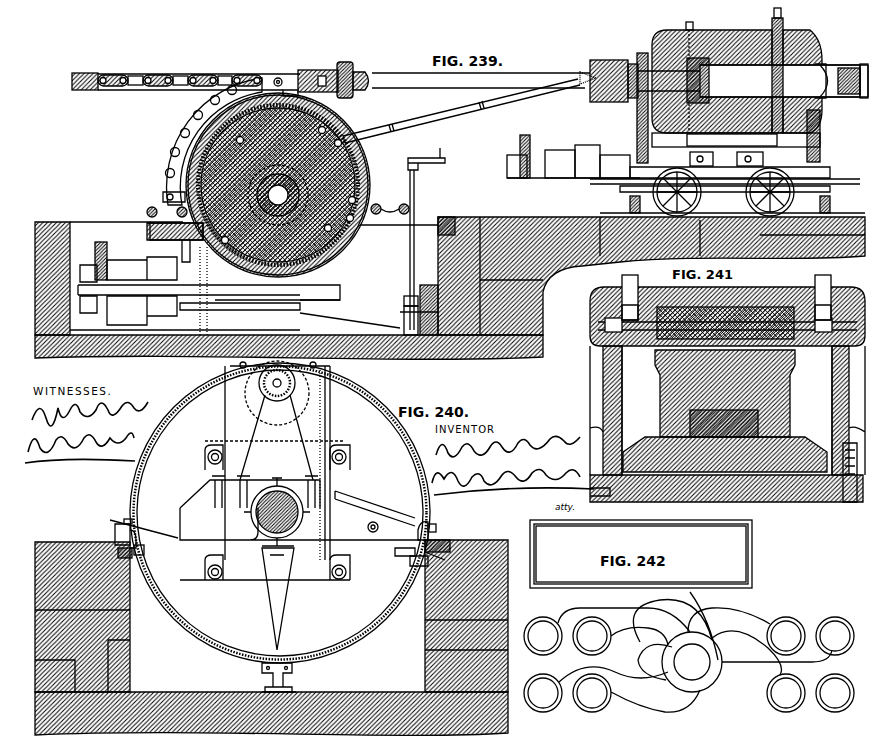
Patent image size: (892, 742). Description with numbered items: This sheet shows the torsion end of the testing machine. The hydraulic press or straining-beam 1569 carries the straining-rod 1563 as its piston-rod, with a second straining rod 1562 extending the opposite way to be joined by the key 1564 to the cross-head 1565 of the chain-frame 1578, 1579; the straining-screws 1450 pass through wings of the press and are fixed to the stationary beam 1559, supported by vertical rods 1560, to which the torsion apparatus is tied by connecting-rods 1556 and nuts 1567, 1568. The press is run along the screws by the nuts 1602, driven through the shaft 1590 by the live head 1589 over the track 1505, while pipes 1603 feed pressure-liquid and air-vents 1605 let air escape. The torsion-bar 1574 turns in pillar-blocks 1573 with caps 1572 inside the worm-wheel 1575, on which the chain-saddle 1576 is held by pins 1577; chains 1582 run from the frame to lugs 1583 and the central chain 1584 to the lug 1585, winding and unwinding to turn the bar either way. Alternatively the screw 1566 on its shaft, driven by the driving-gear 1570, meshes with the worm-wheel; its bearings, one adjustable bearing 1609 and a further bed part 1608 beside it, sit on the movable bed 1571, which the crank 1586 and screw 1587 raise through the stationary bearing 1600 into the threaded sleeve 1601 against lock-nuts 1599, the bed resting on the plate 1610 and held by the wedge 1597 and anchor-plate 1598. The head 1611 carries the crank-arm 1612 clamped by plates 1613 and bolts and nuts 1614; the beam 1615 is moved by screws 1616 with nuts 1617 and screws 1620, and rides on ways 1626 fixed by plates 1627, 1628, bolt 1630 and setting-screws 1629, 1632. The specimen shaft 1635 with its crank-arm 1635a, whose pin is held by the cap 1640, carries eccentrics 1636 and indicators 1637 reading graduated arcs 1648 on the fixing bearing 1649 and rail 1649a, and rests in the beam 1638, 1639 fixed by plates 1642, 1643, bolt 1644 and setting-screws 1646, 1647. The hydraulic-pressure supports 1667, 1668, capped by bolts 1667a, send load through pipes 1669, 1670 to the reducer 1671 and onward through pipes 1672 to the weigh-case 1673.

In FIG. 239, the straining-screws 1450 is at (853, 76).
In FIG. 239, the track 1505 is at (732, 192).
In FIG. 239, the connecting-rods 1556 is at (461, 111).
In FIG. 239, the stationary beam 1559 is at (604, 75).
In FIG. 239, the vertical rods 1560 is at (697, 108).
In FIG. 239, the straining rod 1562 is at (481, 80).
In FIG. 239, the straining-rod 1563 is at (784, 81).
In FIG. 239, the key 1564 is at (355, 76).
In FIG. 239, the cross-head 1565 is at (318, 73).
In FIG. 239, the screw 1566 is at (277, 286).
In FIG. 239, the nuts 1567 is at (668, 80).
In FIG. 239, the nuts 1568 is at (328, 174).
In FIG. 239, the hydraulic press or straining-beam 1569 is at (469, 157).
In FIG. 239, the driving-gear 1570 is at (143, 288).
In FIG. 239, the movable bed-plate 1571 is at (240, 310).
In FIG. 239, the caps 1572 is at (278, 189).
In FIG. 239, the pillar-blocks 1573 is at (278, 185).
In FIG. 239, the torsion-bar 1574 is at (278, 195).
In FIG. 239, the worm-wheel 1575 is at (251, 249).
In FIG. 239, the chain-saddle 1576 is at (318, 227).
In FIG. 239, the pins or tapered bolts 1577 is at (231, 133).
In FIG. 239, the chain-frame cross-head 1578 is at (85, 76).
In FIG. 239, the chain-frame 1579 is at (199, 76).
In FIG. 239, the chains 1582 is at (217, 134).
In FIG. 239, the lugs 1583 is at (165, 194).
In FIG. 239, the central chain 1584 is at (176, 74).
In FIG. 239, the lug 1585 is at (294, 96).
In FIG. 239, the crank 1586 is at (426, 157).
In FIG. 239, the screw 1587 is at (424, 250).
In FIG. 239, the live head 1589 is at (573, 155).
In FIG. 239, the shaft 1590 is at (725, 180).
In FIG. 239, the wedge 1597 is at (435, 310).
In FIG. 239, the anchor-plate 1598 is at (426, 312).
In FIG. 239, the lock-nuts 1599 is at (401, 299).
In FIG. 239, the stationary bearing 1600 is at (407, 226).
In FIG. 239, the threaded sleeve 1601 is at (401, 320).
In FIG. 239, the nuts 1602 is at (823, 72).
In FIG. 239, the pipes 1603 is at (730, 155).
In FIG. 239, the air-vents 1605 is at (733, 67).
In FIG. 239, the ledge 1608 is at (192, 223).
In FIG. 239, the bearing 1609 is at (350, 301).
In FIG. 239, the plate 1610 is at (185, 333).
In FIG. 240, the head 1611 is at (302, 444).
In FIG. 240, the crank-arm 1612 is at (287, 463).
In FIG. 240, the plates 1613 is at (272, 510).
In FIG. 240, the bolts and nuts 1614 is at (289, 514).
In FIG. 240, the beam 1615 is at (375, 502).
In FIG. 239, the screws 1616 is at (387, 203).
In FIG. 240, the nuts 1617 is at (358, 527).
In FIG. 239, the screws 1620 is at (150, 222).
In FIG. 240, the ways 1626 is at (441, 553).
In FIG. 240, the plate 1627 is at (442, 542).
In FIG. 240, the plate 1628 is at (402, 560).
In FIG. 240, the setting-screw 1629 is at (431, 525).
In FIG. 240, the bolt 1630 is at (444, 527).
In FIG. 240, the setting-screw 1632 is at (390, 550).
In FIG. 240, the specimen shaft 1635 is at (277, 383).
In FIG. 240, the crank-arm of the specimen 1635a is at (275, 402).
In FIG. 240, the eccentrics 1636 is at (277, 512).
In FIG. 240, the indicators 1637 is at (288, 599).
In FIG. 240, the beam part 1638 is at (250, 492).
In FIG. 240, the beam part 1639 is at (265, 524).
In FIG. 240, the cap 1640 is at (280, 360).
In FIG. 240, the plate 1642 is at (113, 539).
In FIG. 240, the plate 1643 is at (144, 556).
In FIG. 240, the bolt 1644 is at (109, 534).
In FIG. 240, the setting-screw 1646 is at (118, 516).
In FIG. 240, the setting-screw 1647 is at (152, 550).
In FIG. 240, the graduated arc 1648 is at (280, 513).
In FIG. 240, the fixing bearing 1649 is at (288, 677).
In FIG. 240, the rail 1649a is at (287, 685).
In FIG. 241, the hydraulic-pressure supports 1667 is at (789, 295).
In FIG. 242, the hydraulic-pressure supports 1667 is at (567, 664).
In FIG. 241, the bolts 1667a is at (624, 294).
In FIG. 241, the hydraulic-pressure supports 1668 is at (727, 390).
In FIG. 242, the hydraulic-pressure supports 1668 is at (810, 664).
In FIG. 242, the pipes 1669 is at (629, 662).
In FIG. 242, the pipes 1670 is at (734, 643).
In FIG. 242, the reducer 1671 is at (692, 662).
In FIG. 242, the pipes 1672 is at (676, 624).
In FIG. 242, the weigh-case 1673 is at (641, 554).